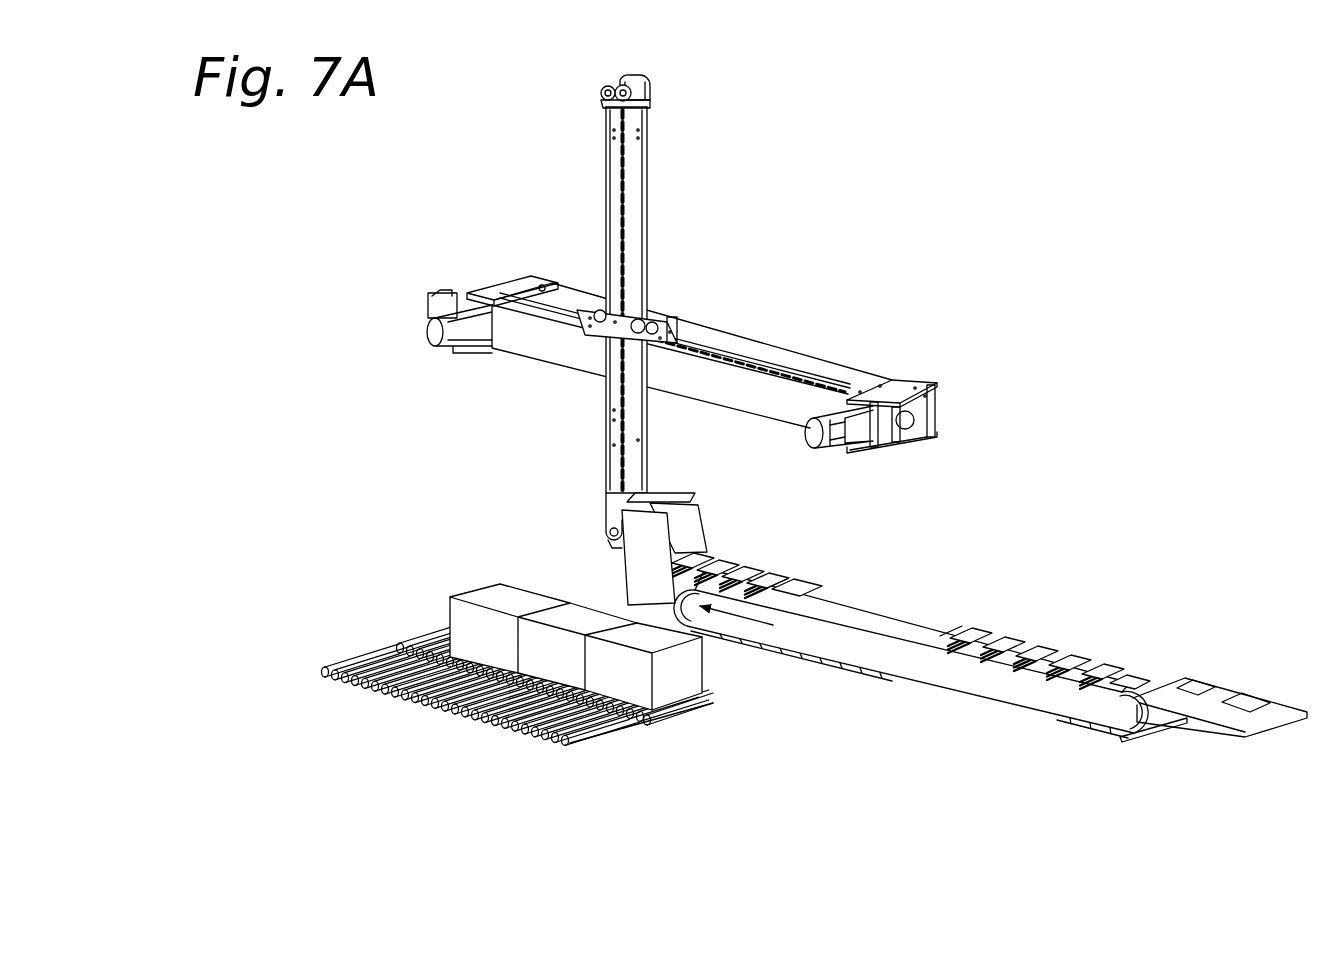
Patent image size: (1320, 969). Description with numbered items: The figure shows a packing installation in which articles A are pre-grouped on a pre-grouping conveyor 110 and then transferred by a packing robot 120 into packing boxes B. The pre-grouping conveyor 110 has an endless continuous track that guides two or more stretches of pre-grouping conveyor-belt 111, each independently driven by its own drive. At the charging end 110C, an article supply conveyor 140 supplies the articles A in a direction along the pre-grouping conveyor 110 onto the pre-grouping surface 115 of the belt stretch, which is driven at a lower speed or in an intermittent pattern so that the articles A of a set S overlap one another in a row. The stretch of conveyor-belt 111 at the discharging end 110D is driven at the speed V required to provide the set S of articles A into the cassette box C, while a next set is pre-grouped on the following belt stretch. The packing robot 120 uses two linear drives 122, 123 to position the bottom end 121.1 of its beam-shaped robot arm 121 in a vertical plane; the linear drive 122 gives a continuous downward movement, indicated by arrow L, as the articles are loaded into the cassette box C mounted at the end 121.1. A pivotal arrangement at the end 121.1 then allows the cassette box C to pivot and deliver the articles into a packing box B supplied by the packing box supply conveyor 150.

The pre-grouping conveyor 110 is at (907, 567).
The charging end 110C is at (1175, 625).
The discharging end 110D is at (748, 658).
The pre-grouping conveyor-belt 111 is at (777, 570).
The pre-grouping surface 115 is at (793, 582).
The packing robot 120 is at (760, 212).
The robot arm 121 is at (612, 410).
The bottom end of the robot arm 121.1 is at (603, 547).
The linear drive 122 is at (669, 327).
The linear drive 123 is at (783, 358).
The article supply conveyor 140 is at (1173, 748).
The packing box supply conveyor 150 is at (463, 753).
The article A is at (1058, 657).
The packing box B is at (587, 615).
The cassette box C is at (692, 505).
The set of articles S is at (727, 548).
The arrow indicating downward movement L is at (578, 430).
The speed V is at (757, 622).